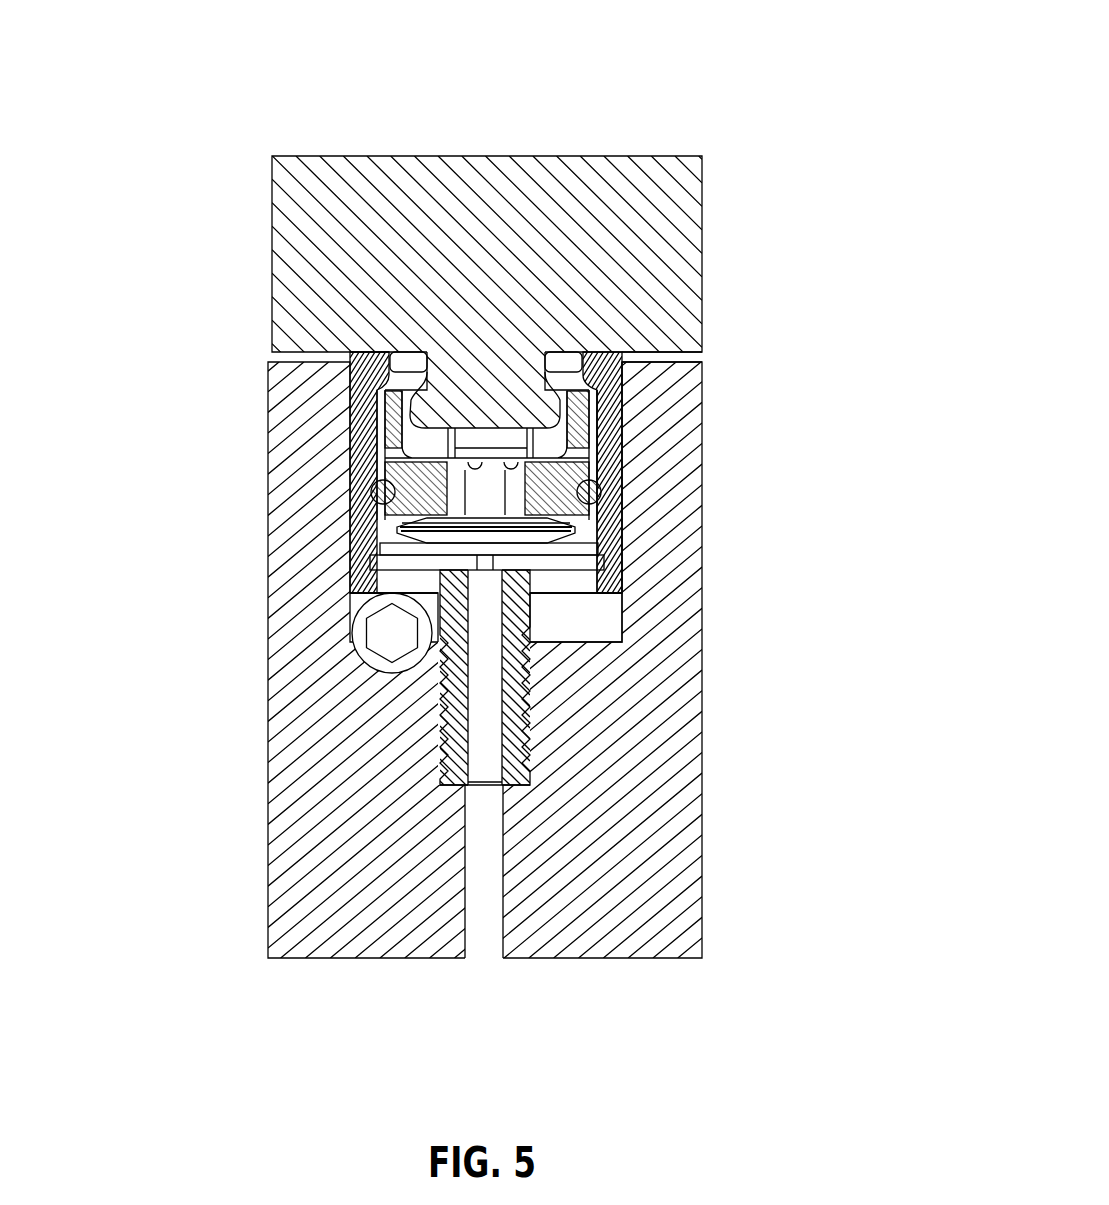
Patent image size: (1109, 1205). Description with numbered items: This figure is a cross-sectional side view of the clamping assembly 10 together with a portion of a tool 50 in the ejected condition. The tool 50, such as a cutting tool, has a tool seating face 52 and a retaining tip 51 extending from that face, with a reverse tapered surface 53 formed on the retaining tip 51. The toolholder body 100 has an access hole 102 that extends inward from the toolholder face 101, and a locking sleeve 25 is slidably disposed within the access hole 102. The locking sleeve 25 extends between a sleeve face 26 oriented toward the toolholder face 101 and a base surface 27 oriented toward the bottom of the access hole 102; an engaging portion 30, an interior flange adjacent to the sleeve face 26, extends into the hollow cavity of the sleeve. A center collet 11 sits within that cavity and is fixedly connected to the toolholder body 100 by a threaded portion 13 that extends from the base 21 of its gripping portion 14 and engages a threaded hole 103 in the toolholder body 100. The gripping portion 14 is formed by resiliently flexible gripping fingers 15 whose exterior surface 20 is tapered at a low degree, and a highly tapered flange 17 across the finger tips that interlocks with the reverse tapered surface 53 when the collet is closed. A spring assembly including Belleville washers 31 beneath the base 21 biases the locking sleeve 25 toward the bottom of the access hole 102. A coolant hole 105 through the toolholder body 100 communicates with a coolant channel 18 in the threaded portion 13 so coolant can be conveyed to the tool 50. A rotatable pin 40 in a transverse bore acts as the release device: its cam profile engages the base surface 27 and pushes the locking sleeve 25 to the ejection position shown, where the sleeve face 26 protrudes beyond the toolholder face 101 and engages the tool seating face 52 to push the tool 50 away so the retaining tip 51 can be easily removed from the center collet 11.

The clamping assembly 10 is at (874, 245).
The center collet 11 is at (582, 478).
The threaded portion 13 is at (522, 680).
The gripping portion 14 is at (440, 462).
The gripping fingers 15 is at (560, 443).
The tapered flange 17 is at (603, 410).
The coolant channel 18 is at (487, 735).
The exterior surface 20 is at (405, 440).
The base 21 is at (432, 540).
The locking sleeve 25 is at (612, 532).
The sleeve face 26 is at (400, 375).
The base surface 27 is at (607, 595).
The engaging portion 30 is at (635, 372).
The Belleville washers 31 is at (350, 612).
The rotatable pin 40 is at (356, 657).
The tool 50 is at (567, 178).
The retaining tip 51 is at (455, 405).
The tool seating face 52 is at (645, 348).
The reverse tapered surface 53 is at (393, 355).
The toolholder body 100 is at (703, 815).
The toolholder face 101 is at (683, 363).
The access hole 102 is at (580, 630).
The threaded hole 103 is at (530, 785).
The coolant hole 105 is at (482, 932).